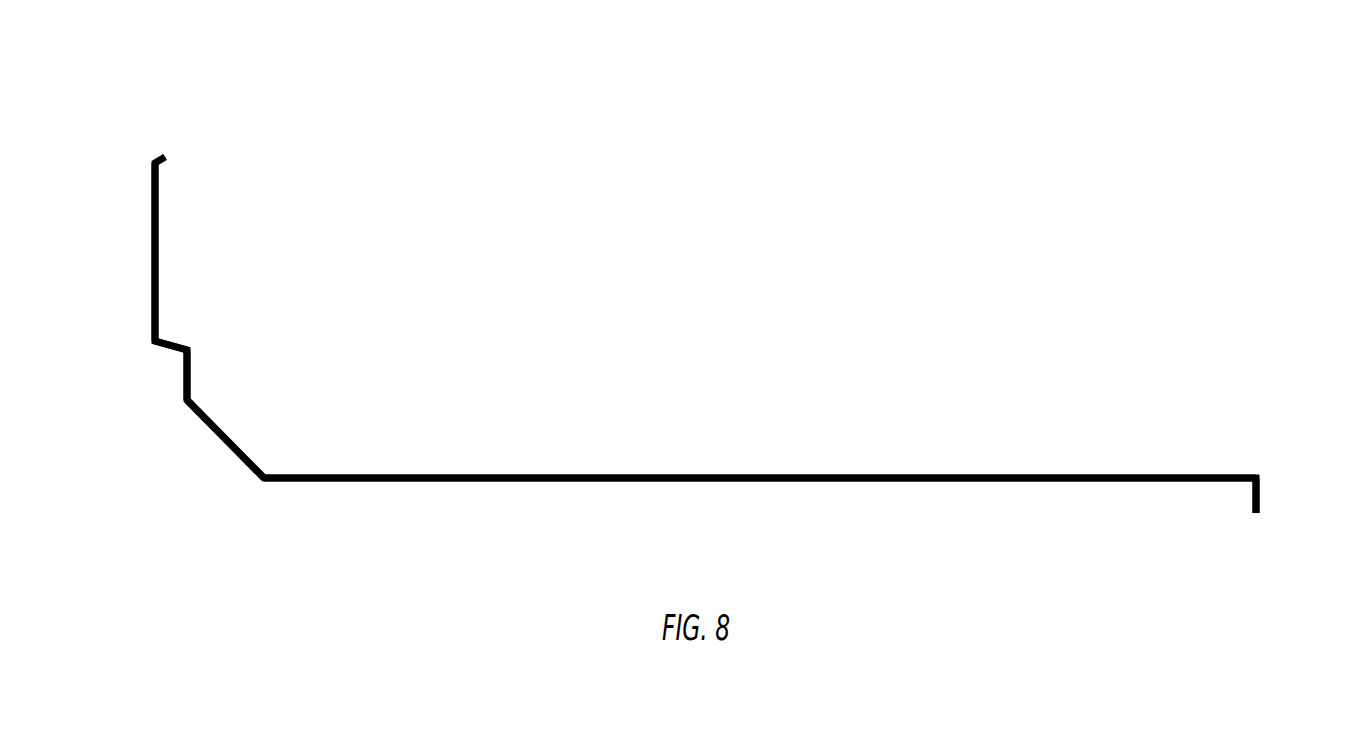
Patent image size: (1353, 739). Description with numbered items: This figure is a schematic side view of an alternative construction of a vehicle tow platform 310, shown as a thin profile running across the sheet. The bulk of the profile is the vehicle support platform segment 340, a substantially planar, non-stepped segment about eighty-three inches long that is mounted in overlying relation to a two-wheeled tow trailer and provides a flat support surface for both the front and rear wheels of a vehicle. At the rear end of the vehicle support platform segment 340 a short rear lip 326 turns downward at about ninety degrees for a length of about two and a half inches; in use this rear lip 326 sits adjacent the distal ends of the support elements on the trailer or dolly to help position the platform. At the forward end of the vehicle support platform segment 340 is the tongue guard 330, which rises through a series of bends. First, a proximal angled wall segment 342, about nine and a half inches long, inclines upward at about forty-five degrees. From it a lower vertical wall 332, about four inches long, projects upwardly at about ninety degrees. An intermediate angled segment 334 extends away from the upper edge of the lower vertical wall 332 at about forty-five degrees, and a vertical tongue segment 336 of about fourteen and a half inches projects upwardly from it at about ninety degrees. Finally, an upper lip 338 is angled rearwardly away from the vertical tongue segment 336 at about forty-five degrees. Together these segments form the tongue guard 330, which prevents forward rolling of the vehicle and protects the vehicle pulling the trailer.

The vehicle tow platform 310 is at (740, 348).
The rear lip 326 is at (1265, 497).
The tongue guard 330 is at (166, 246).
The lower vertical wall 332 is at (193, 380).
The intermediate angled segment 334 is at (175, 338).
The vertical tongue segment 336 is at (158, 253).
The upper lip 338 is at (160, 158).
The vehicle support platform segment 340 is at (693, 474).
The proximal angled wall segment 342 is at (230, 435).